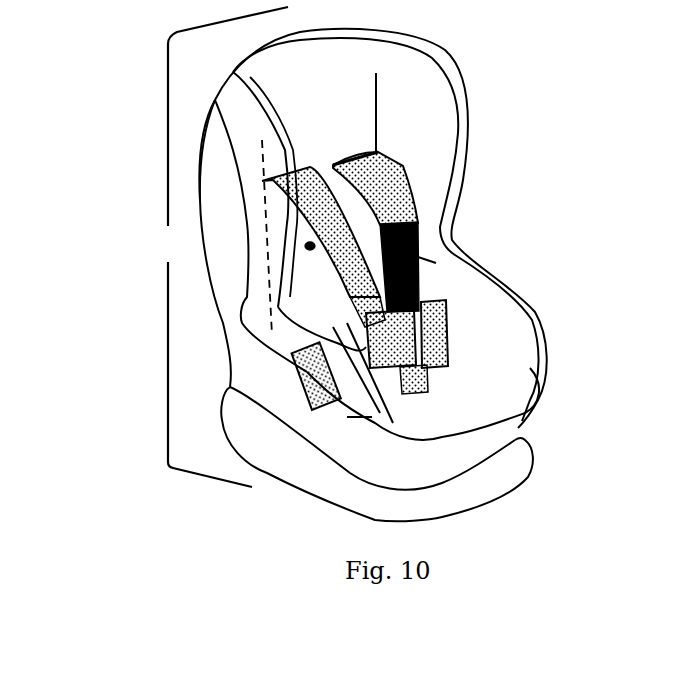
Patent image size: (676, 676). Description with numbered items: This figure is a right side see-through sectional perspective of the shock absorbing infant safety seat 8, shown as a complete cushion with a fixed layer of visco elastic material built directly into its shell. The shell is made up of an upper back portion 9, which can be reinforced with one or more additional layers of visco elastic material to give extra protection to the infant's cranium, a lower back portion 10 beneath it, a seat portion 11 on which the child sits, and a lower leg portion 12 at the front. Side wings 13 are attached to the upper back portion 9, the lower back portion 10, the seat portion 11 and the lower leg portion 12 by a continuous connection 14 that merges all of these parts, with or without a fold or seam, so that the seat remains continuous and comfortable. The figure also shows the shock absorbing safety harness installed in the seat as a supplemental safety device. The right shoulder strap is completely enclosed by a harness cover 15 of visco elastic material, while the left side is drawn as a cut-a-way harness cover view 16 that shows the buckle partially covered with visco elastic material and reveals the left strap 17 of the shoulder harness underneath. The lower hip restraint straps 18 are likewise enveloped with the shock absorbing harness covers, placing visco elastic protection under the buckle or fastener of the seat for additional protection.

The safety seat 8 is at (225, 247).
The upper back portion 9 is at (325, 130).
The lower back portion 10 is at (424, 248).
The seat portion 11 is at (385, 368).
The lower leg portion 12 is at (457, 413).
The side wings 13 is at (424, 76).
The continuous connection 14 is at (260, 142).
The harness cover 15 is at (323, 247).
The cut-a-way harness cover view 16 is at (389, 169).
The left strap 17 is at (431, 272).
The lower hip restraint straps 18 is at (448, 331).